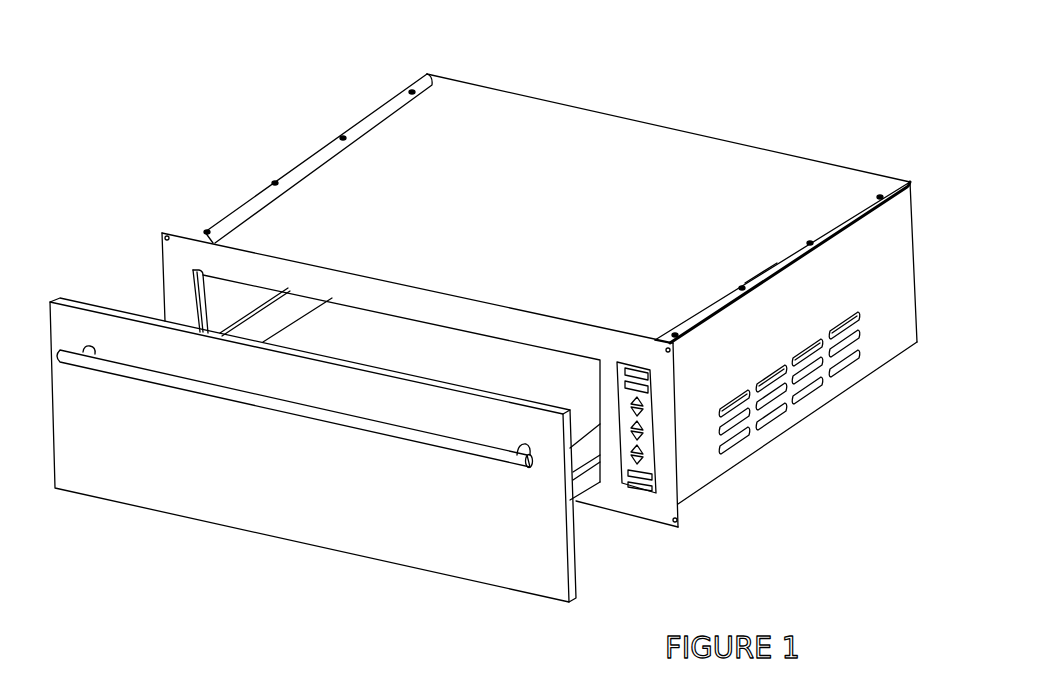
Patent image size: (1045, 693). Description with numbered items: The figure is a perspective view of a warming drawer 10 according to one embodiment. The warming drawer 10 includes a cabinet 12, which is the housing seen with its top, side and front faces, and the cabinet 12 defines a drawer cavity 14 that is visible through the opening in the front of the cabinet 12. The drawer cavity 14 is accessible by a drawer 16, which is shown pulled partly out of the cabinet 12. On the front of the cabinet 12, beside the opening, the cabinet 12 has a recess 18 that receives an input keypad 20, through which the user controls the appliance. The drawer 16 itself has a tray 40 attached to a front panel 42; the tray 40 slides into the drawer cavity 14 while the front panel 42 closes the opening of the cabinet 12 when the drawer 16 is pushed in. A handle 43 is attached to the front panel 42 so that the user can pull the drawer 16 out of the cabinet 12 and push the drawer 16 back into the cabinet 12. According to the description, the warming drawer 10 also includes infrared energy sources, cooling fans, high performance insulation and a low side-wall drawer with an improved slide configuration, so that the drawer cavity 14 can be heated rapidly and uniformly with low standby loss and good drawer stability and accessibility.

The warming drawer 10 is at (483, 318).
The cabinet 12 is at (742, 124).
The drawer cavity 14 is at (300, 315).
The drawer 16 is at (381, 463).
The recess 18 is at (736, 444).
The input keypad 20 is at (666, 457).
The tray 40 is at (600, 478).
The front panel 42 is at (436, 577).
The handle 43 is at (397, 455).